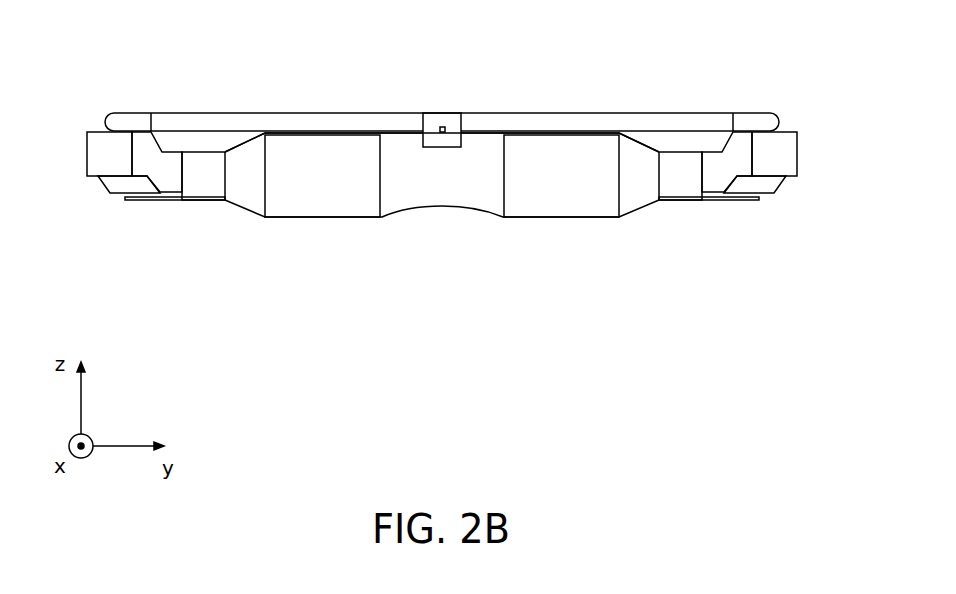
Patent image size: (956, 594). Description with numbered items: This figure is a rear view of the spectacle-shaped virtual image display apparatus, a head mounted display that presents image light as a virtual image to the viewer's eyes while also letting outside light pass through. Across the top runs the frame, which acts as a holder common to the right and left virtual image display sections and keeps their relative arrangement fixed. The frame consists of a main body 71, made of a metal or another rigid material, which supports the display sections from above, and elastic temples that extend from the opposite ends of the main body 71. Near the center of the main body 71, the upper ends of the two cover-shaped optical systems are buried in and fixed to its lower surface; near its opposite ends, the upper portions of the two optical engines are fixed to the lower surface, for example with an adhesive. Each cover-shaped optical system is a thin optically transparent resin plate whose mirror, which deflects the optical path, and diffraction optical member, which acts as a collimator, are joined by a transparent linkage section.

The main body 71 is at (400, 126).